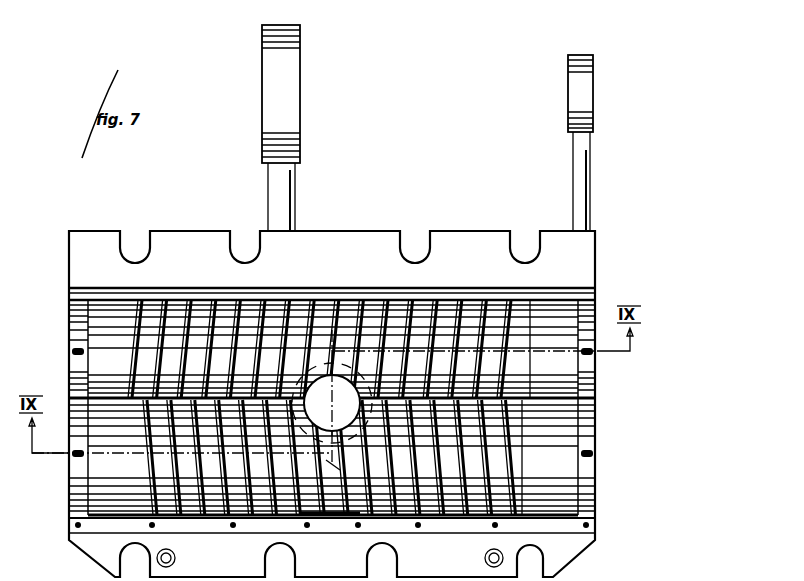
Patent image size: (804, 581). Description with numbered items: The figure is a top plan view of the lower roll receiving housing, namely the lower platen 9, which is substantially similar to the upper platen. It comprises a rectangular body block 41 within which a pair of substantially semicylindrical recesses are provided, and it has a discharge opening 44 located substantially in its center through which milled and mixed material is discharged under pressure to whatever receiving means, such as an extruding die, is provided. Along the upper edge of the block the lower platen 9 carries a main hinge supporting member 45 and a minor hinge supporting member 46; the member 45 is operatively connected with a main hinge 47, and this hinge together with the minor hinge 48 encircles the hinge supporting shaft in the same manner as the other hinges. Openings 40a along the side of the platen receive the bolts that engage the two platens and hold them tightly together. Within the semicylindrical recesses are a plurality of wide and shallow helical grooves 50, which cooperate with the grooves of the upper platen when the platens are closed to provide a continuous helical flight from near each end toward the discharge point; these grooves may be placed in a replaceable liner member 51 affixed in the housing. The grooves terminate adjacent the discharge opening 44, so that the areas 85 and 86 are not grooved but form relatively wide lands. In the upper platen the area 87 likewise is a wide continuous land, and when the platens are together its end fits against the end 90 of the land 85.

The lower platen 9 is at (600, 257).
The openings 40a is at (403, 247).
The rectangular body block 41 is at (353, 247).
The discharge opening 44 is at (332, 403).
The main hinge supporting member 45 is at (295, 194).
The minor hinge supporting member 46 is at (590, 171).
The main hinge 47 is at (300, 28).
The minor hinge 48 is at (586, 84).
The helical grooves 50 is at (497, 298).
The liner member 51 is at (200, 516).
The land area 85 is at (333, 467).
The land area 86 is at (334, 352).
The land 87 is at (533, 397).
The end of land 90 is at (328, 512).